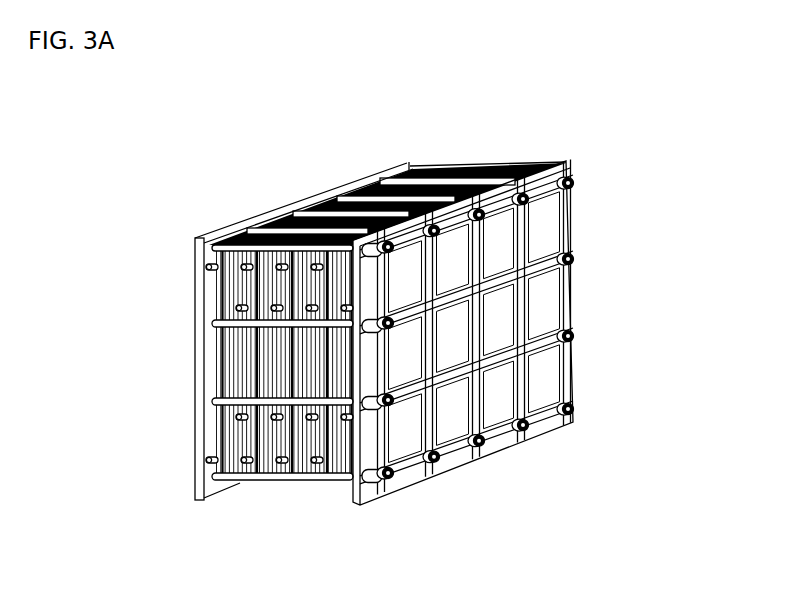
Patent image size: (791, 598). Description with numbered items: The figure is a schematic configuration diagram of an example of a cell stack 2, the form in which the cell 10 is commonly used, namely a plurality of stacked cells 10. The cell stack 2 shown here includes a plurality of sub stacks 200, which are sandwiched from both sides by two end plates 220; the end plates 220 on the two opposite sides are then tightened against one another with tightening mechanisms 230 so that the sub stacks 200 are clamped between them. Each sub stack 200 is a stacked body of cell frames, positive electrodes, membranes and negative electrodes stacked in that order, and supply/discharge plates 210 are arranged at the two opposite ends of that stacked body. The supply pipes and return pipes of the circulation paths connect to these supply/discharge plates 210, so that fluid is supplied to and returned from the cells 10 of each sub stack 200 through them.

The cell stack 2 is at (379, 337).
The cell 10 is at (428, 180).
The sub stack 200 is at (243, 412).
The supply/discharge plate 210 is at (217, 442).
The end plate 220 is at (195, 256).
The tightening mechanism 230 is at (310, 213).